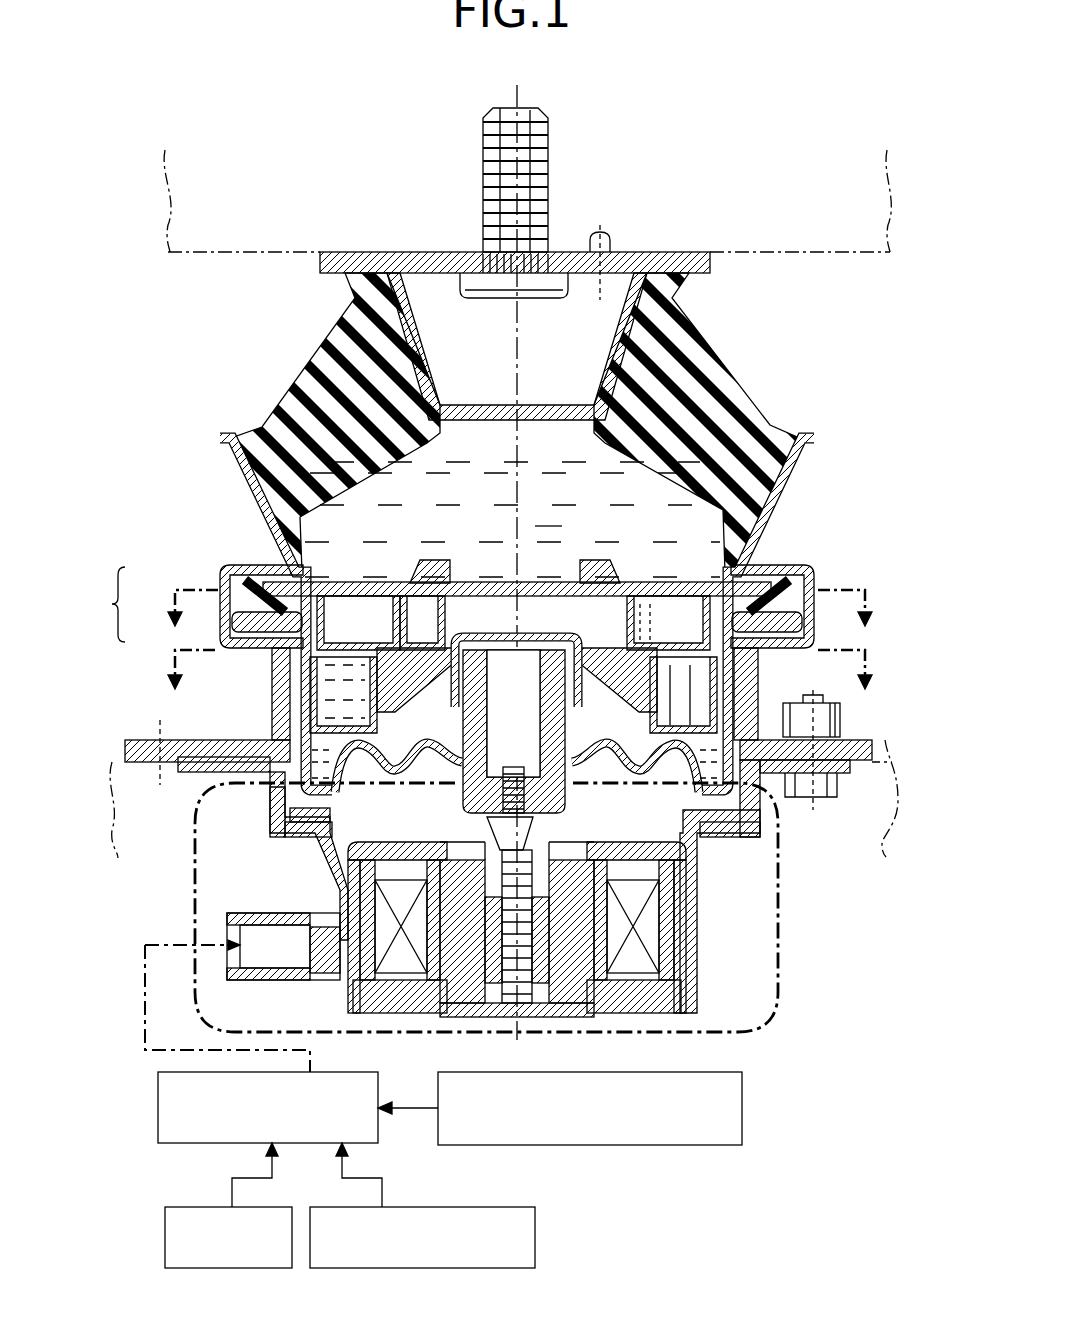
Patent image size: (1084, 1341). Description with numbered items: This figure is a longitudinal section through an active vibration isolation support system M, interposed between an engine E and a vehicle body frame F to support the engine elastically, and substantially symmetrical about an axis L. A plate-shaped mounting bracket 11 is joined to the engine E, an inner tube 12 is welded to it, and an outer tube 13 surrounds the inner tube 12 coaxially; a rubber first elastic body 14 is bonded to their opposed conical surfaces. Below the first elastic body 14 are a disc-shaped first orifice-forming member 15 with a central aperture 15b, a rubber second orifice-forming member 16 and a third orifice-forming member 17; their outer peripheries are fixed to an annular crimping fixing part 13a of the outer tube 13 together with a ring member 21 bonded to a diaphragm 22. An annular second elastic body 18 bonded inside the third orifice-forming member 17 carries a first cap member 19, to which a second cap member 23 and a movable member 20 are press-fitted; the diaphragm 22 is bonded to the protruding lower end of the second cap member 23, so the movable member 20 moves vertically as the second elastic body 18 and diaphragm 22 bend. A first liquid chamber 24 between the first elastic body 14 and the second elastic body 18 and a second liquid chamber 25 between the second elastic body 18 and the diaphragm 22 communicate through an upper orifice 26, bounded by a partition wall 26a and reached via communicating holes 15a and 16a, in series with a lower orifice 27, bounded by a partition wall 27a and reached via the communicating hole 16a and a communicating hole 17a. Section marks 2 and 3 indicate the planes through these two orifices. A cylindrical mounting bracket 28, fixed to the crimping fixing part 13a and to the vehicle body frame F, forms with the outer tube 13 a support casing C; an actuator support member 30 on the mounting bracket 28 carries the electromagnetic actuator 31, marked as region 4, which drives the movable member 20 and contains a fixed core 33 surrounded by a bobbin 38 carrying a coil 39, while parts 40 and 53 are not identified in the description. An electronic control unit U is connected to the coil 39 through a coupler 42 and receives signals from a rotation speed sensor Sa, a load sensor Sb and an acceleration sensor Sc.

The axis L is at (519, 97).
The engine E is at (792, 258).
The active vibration isolation support system M is at (808, 502).
The mounting bracket 11 is at (692, 258).
The inner tube 12 is at (430, 350).
The outer tube 13 is at (472, 614).
The crimping fixing part 13a is at (218, 578).
The first elastic body 14 is at (318, 378).
The first orifice-forming member 15 is at (428, 556).
The communicating hole 15a is at (672, 582).
The aperture 15b is at (455, 582).
The second orifice-forming member 16 is at (342, 622).
The communicating hole 16a is at (674, 622).
The third orifice-forming member 17 is at (340, 720).
The communicating hole 17a is at (683, 695).
The second elastic body 18 is at (425, 690).
The first cap member 19 is at (533, 640).
The movable member 20 is at (560, 812).
The ring member 21 is at (225, 597).
The diaphragm 22 is at (393, 782).
The second cap member 23 is at (460, 720).
The first liquid chamber 24 is at (551, 512).
The second liquid chamber 25 is at (575, 720).
The upper orifice 26 is at (340, 600).
The partition wall 26a is at (628, 602).
The lower orifice 27 is at (330, 668).
The partition wall 27a is at (706, 707).
The cylindrical mounting bracket 28 is at (175, 740).
The actuator support member 30 is at (272, 793).
The electromagnetic actuator 31 is at (773, 895).
The fixed core 33 is at (565, 965).
The bobbin 38 is at (452, 860).
The coil 39 is at (693, 908).
The connector 40 is at (257, 980).
The coupler 42 is at (252, 913).
The coil winding 53 is at (565, 908).
The actuator 4 is at (790, 975).
The section line 2 is at (518, 588).
The section line 3 is at (518, 690).
The support casing C is at (110, 604).
The vehicle body frame F is at (504, 772).
The electronic control unit U is at (158, 1100).
The rotation speed sensor Sa is at (568, 1145).
The load sensor Sb is at (205, 1207).
The acceleration sensor Sc is at (400, 1207).